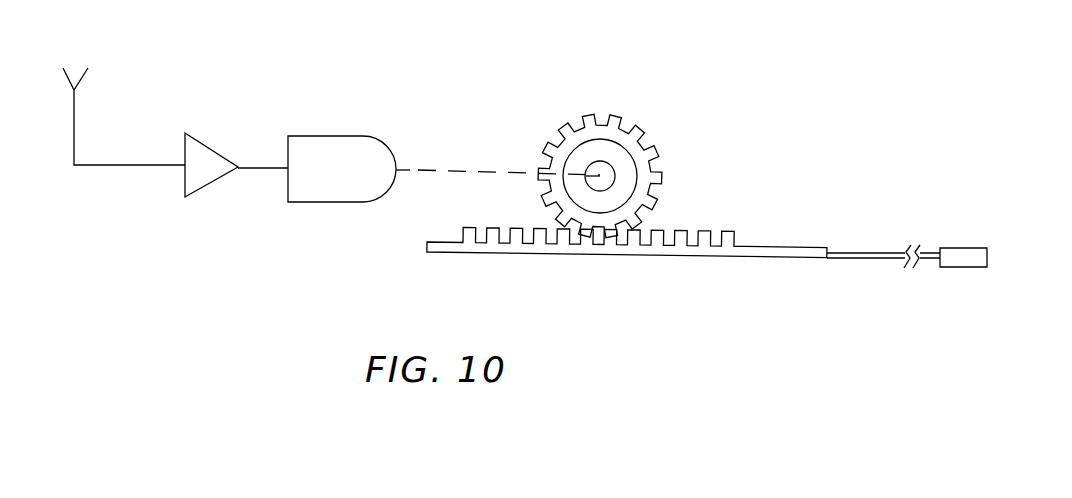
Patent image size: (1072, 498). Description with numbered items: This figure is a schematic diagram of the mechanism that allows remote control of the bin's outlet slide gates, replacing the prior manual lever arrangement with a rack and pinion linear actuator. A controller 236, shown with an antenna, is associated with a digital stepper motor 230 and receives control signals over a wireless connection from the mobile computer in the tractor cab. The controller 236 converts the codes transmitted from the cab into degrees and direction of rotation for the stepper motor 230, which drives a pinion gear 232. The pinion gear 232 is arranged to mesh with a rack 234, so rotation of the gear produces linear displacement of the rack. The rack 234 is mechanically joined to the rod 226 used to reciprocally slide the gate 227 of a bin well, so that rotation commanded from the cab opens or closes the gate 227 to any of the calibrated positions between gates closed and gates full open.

The controller 236 is at (203, 133).
The digital stepper motor 230 is at (323, 136).
The pinion gear 232 is at (590, 118).
The rack 234 is at (707, 231).
The rod 226 is at (895, 252).
The gate 227 is at (963, 248).